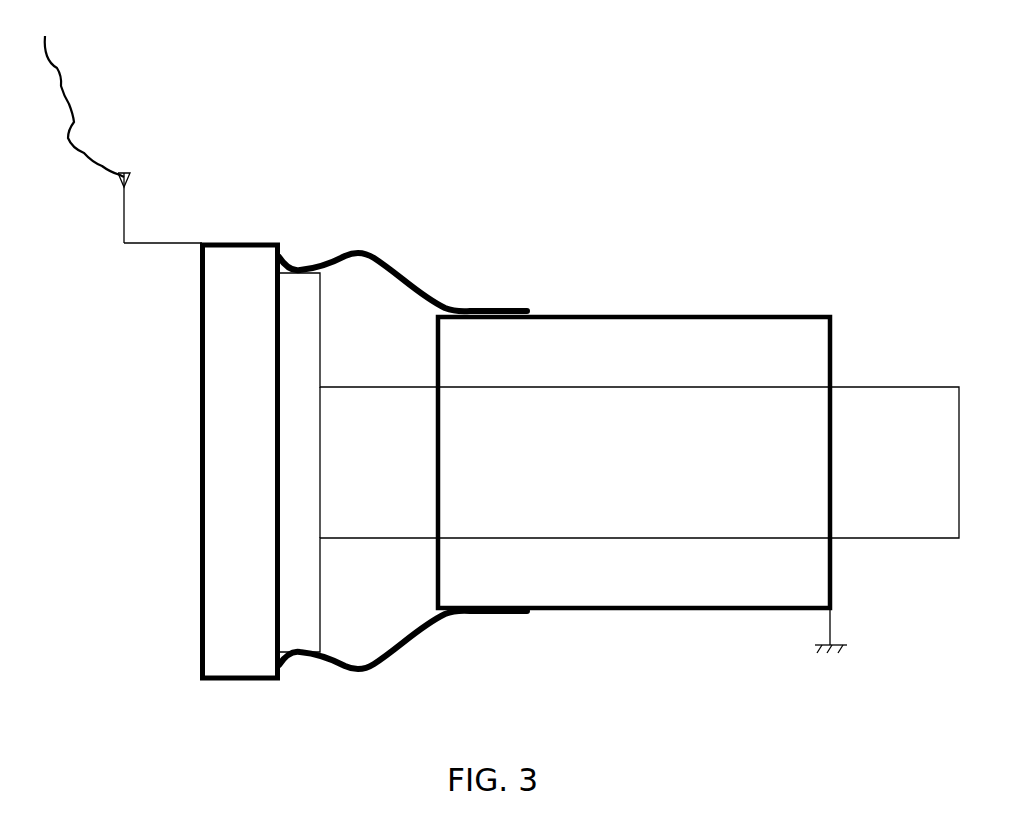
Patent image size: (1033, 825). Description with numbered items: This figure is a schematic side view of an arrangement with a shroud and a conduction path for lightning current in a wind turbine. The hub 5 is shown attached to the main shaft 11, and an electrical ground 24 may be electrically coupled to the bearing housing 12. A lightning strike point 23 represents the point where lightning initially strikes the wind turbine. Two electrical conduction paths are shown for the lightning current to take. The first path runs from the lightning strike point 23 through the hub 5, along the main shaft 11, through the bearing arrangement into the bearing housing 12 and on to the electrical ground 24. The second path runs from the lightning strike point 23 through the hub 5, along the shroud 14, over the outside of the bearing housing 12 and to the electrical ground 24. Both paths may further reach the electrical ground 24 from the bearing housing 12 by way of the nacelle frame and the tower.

The hub 5 is at (200, 392).
The main shaft 11 is at (322, 322).
The bearing housing 12 is at (765, 316).
The shroud 14 is at (358, 249).
The lightning strike point 23 is at (122, 213).
The electrical ground 24 is at (832, 622).